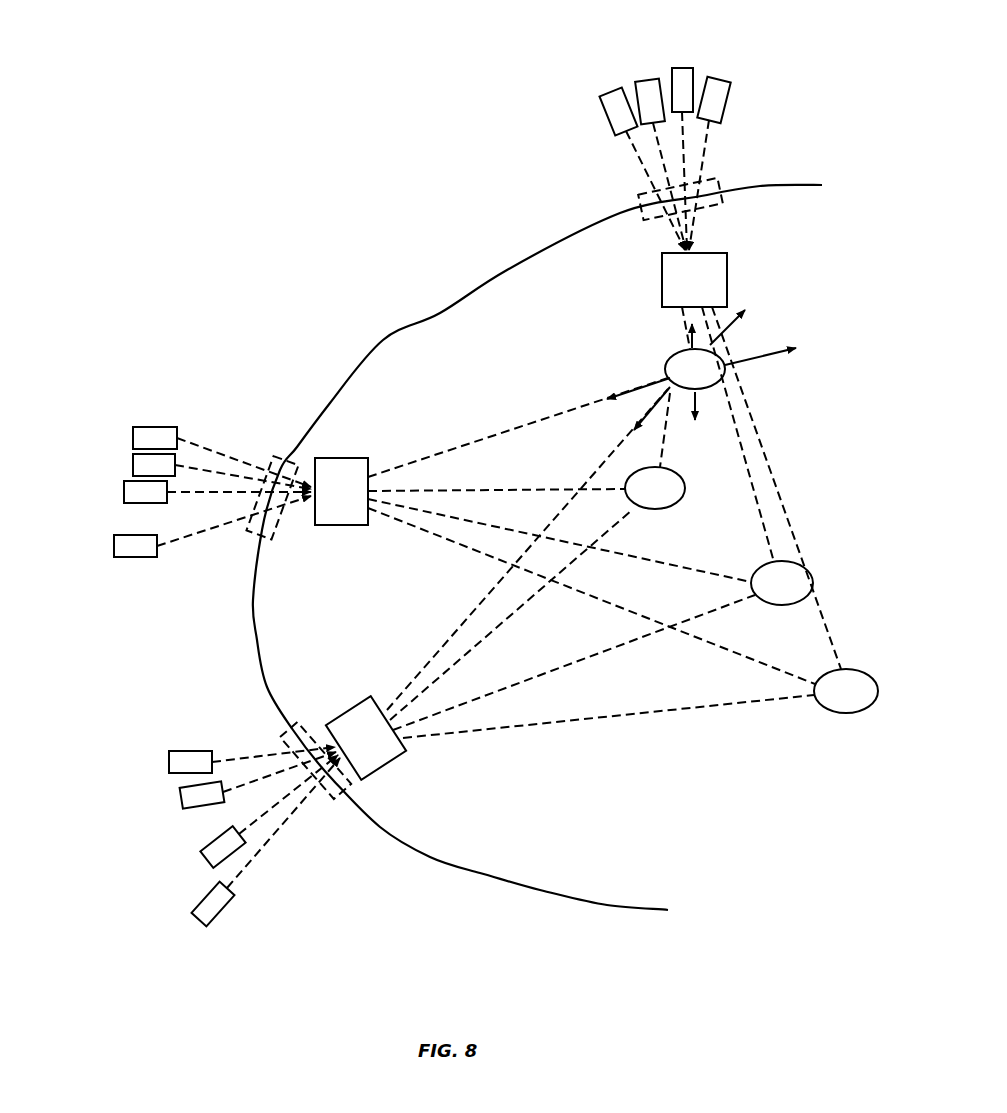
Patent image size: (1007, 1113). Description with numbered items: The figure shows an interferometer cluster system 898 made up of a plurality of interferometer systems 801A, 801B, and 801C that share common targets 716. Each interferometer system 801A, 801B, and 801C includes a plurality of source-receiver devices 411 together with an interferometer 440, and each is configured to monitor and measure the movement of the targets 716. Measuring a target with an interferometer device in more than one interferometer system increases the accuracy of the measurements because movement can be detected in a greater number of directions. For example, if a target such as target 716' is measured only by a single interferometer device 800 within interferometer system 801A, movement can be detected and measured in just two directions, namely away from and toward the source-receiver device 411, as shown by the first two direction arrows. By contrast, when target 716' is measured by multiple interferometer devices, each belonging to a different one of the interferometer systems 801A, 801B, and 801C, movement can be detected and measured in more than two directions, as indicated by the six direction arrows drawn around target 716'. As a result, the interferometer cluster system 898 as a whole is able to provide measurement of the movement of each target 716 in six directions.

The interferometer cluster system 898 is at (220, 160).
The interferometer device 800 is at (108, 573).
The source-receiver device 411 is at (163, 427).
The interferometer 440 is at (360, 458).
The interferometer system 801A is at (329, 437).
The interferometer system 801B is at (343, 696).
The interferometer system 801C is at (610, 260).
The target 716 is at (759, 624).
The target 716' is at (697, 368).